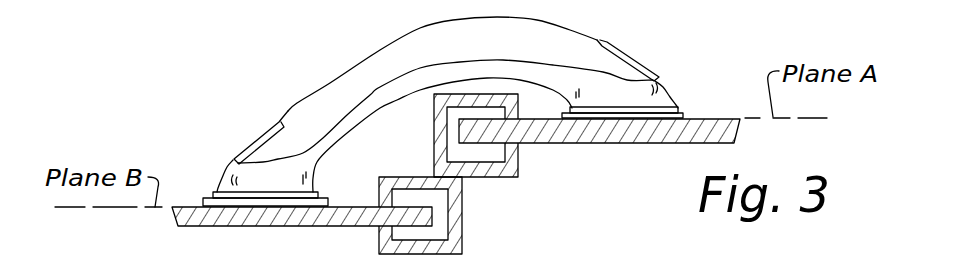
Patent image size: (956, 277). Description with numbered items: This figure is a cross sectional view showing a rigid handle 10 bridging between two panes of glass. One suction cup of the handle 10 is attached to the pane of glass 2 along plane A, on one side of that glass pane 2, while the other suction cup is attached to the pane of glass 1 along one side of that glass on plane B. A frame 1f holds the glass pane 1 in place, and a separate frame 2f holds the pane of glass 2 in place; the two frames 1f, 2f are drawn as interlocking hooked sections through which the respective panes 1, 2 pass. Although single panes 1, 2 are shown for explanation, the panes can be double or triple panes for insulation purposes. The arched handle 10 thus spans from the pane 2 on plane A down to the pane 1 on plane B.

The golf shoe / shoe body 10 is at (661, 33).
The pane of glass 1 is at (300, 227).
The pane of glass 2 is at (641, 143).
The frame 1f is at (462, 220).
The frame 2f is at (502, 178).